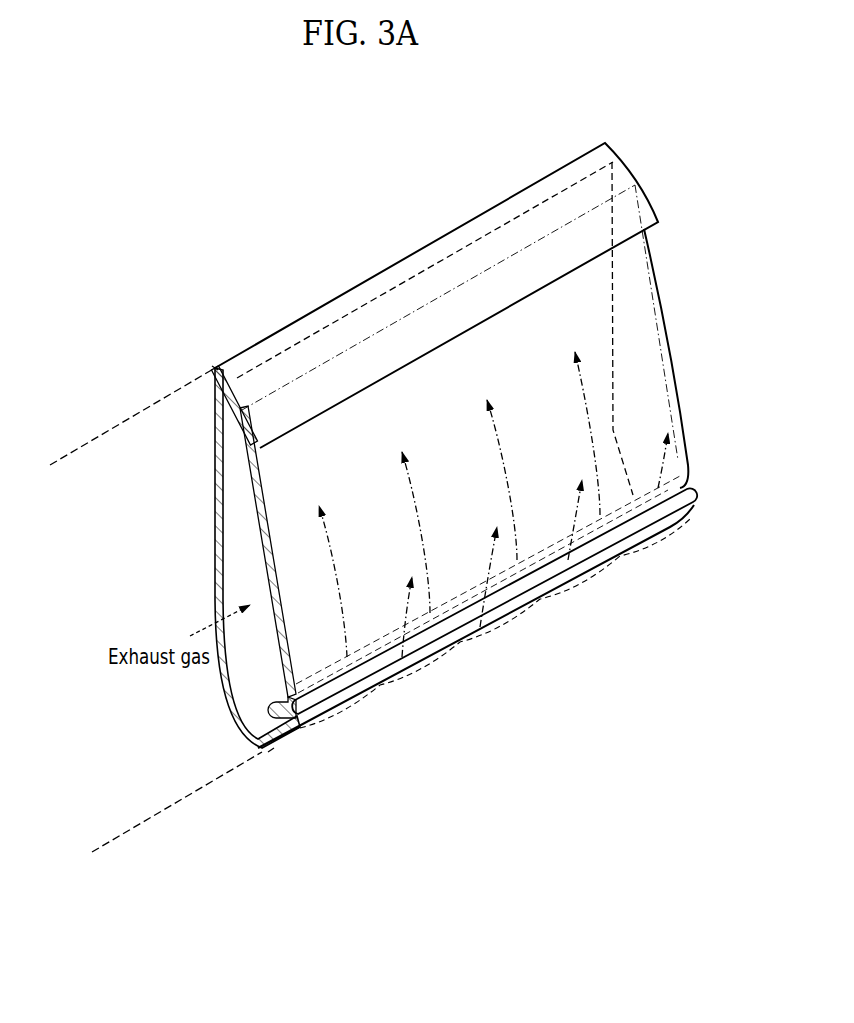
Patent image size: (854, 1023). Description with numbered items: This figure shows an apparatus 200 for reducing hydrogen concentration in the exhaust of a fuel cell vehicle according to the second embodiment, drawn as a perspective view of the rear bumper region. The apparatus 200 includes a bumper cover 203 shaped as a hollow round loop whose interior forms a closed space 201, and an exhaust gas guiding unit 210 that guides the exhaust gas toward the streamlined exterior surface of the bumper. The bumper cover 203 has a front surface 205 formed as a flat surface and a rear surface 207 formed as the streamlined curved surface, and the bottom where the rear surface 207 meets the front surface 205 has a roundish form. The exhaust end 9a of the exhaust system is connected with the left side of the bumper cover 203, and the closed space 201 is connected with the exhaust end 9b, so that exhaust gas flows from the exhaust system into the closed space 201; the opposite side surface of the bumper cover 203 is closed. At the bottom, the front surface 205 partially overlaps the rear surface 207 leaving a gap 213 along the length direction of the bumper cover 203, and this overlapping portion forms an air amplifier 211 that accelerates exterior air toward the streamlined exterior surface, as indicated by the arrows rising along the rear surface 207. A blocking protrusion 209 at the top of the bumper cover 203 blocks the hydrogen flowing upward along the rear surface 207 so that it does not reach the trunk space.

The apparatus for reducing hydrogen concentration 200 is at (467, 113).
The closed space 201 is at (245, 578).
The bumper cover 203 is at (201, 558).
The front surface 205 is at (222, 554).
The rear surface 207 is at (243, 504).
The blocking protrusion 209 is at (245, 441).
The exhaust gas guiding unit 210 is at (578, 588).
The air amplifier 211 is at (270, 719).
The gap 213 is at (284, 747).
The exhaust end 9a is at (120, 425).
The exhaust end 9b is at (215, 368).